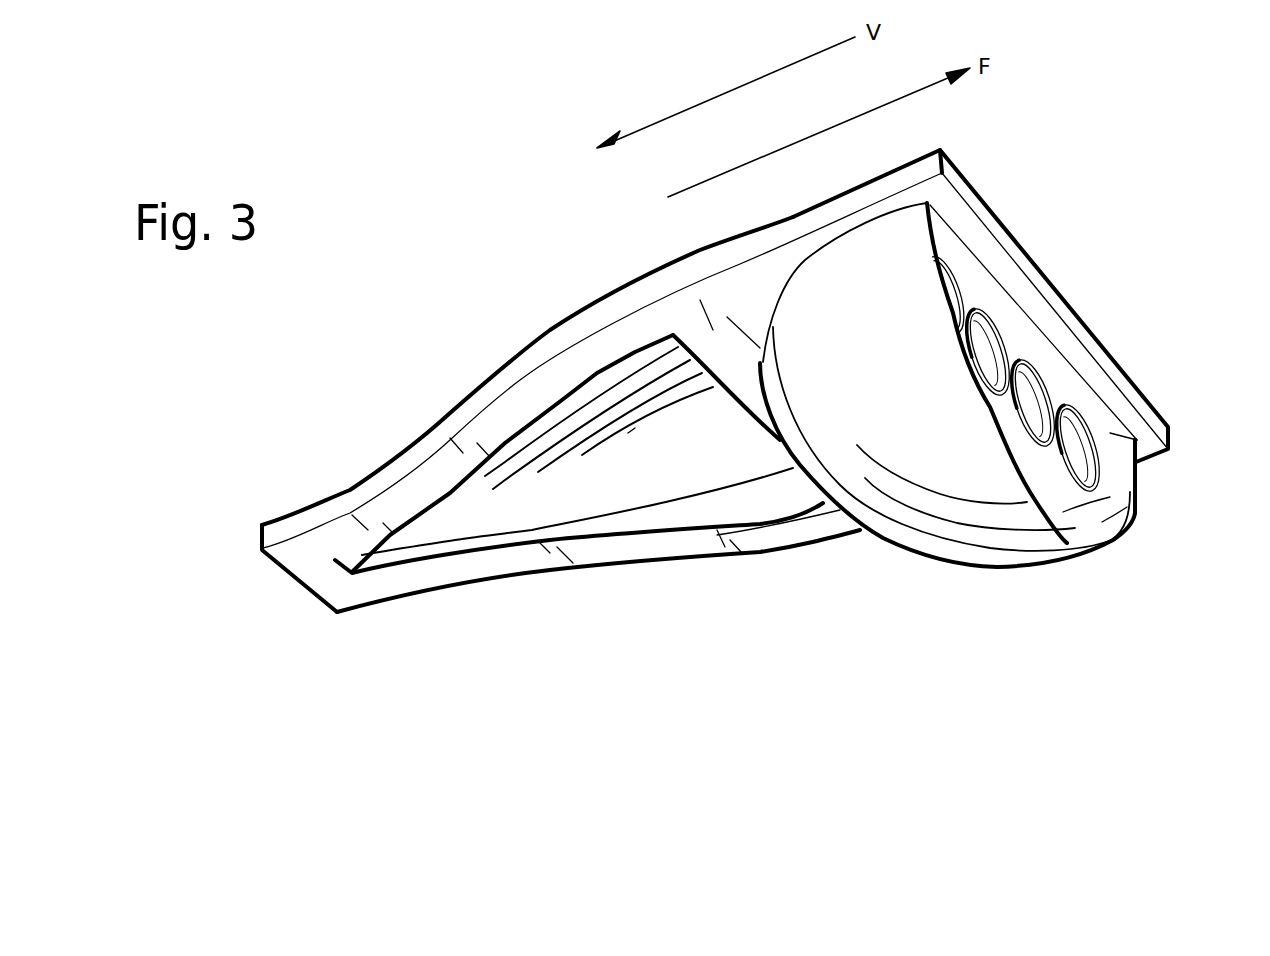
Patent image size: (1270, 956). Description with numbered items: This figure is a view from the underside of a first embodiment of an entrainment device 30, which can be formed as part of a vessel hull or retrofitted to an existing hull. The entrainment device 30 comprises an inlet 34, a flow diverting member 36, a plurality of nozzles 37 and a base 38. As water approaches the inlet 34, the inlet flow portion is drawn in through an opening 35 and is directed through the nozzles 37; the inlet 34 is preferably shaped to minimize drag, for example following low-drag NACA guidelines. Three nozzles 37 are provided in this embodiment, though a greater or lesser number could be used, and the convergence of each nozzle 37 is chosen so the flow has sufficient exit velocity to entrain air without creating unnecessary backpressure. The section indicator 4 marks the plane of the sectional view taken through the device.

The entrainment device 30 is at (690, 596).
The inlet 34 is at (557, 462).
The opening 35 is at (503, 508).
The flow diverting member 36 is at (938, 473).
The nozzles 37 is at (980, 333).
The base 38 is at (757, 283).
The section line 4- 4 is at (203, 607).